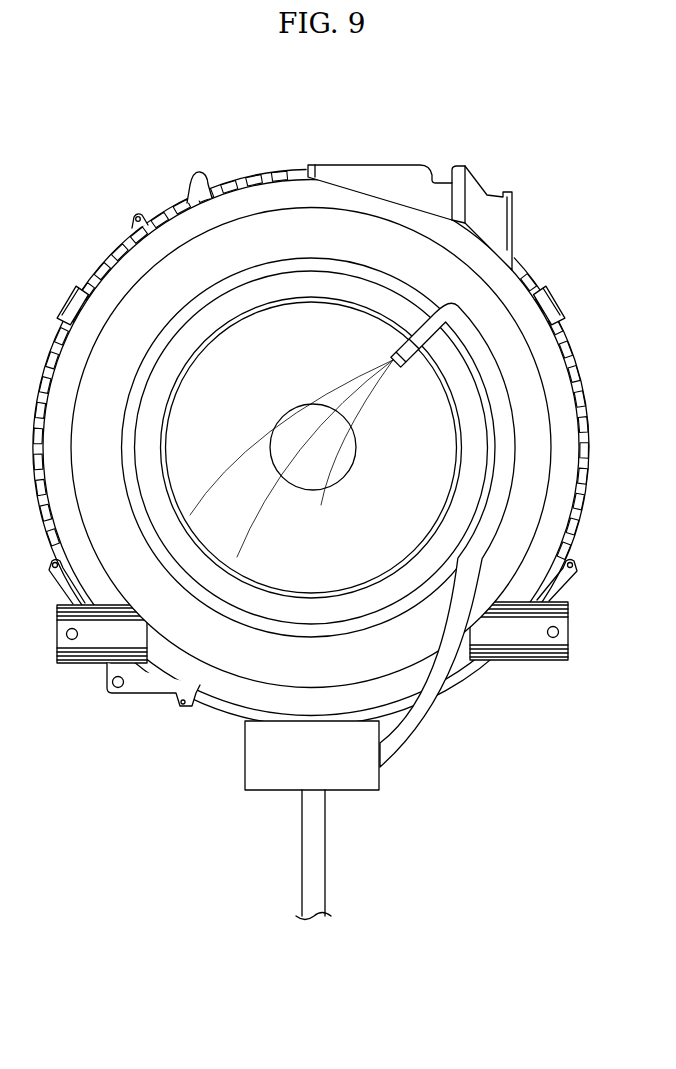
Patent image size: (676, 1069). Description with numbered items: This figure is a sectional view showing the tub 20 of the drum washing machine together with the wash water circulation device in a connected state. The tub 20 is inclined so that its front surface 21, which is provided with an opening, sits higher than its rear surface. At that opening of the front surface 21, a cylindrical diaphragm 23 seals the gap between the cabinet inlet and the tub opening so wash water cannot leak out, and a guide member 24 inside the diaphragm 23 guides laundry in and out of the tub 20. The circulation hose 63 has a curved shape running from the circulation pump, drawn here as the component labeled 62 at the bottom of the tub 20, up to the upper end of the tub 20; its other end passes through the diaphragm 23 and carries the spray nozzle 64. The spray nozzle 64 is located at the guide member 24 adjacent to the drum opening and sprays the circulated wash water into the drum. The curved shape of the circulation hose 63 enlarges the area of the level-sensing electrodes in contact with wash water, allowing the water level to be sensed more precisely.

The tub 20 is at (368, 163).
The front surface 21 is at (290, 223).
The diaphragm 23 is at (352, 287).
The guide member 24 is at (311, 303).
The circulation pump 62 is at (364, 784).
The circulation hose 63 is at (431, 722).
The spray nozzle 64 is at (405, 367).